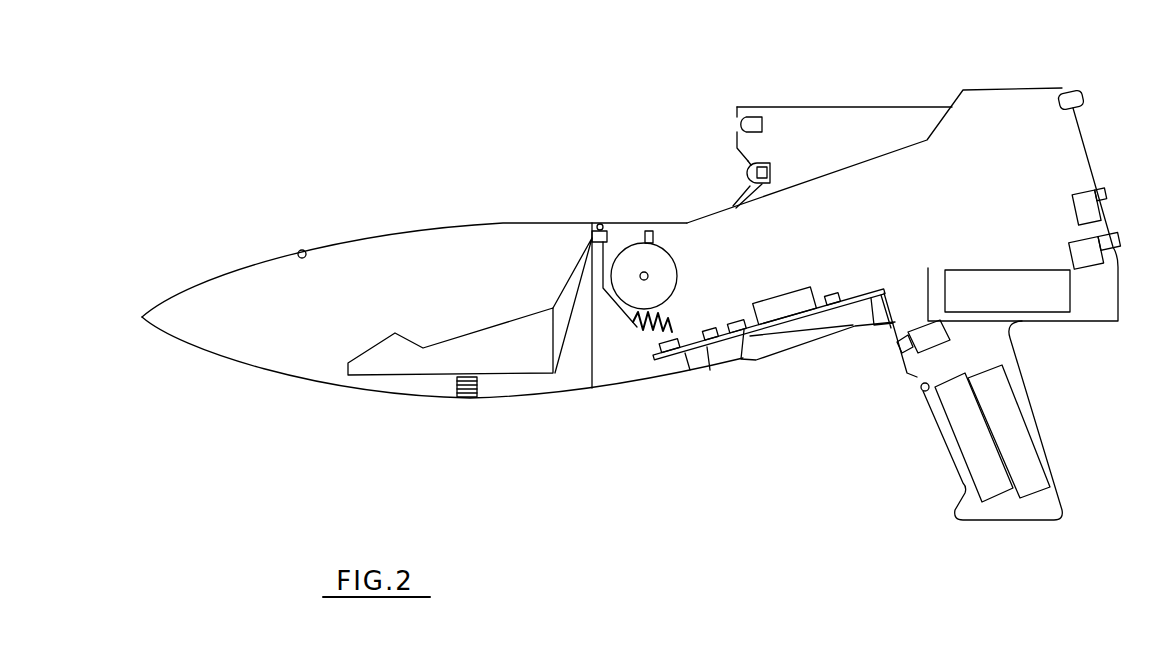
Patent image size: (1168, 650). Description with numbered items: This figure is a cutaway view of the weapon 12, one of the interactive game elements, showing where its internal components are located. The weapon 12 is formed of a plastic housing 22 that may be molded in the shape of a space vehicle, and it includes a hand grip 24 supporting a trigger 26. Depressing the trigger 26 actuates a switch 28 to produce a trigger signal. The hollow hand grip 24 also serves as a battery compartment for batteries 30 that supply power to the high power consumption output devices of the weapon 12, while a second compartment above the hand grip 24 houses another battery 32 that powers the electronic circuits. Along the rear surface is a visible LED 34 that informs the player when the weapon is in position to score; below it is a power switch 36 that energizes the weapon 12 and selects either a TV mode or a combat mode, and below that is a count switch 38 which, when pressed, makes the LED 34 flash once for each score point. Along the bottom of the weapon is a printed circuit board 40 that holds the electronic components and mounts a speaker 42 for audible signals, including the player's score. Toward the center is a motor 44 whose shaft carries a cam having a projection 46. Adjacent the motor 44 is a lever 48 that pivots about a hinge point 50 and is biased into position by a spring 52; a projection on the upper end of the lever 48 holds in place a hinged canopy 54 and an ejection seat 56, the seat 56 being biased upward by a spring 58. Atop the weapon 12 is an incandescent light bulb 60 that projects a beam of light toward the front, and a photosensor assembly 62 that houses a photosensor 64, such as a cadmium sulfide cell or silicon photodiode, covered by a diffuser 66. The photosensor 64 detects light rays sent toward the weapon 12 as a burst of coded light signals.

The weapon 12 is at (488, 110).
The plastic housing 22 is at (1028, 87).
The hand grip 24 is at (948, 452).
The trigger 26 is at (907, 358).
The switch 28 is at (920, 352).
The batteries 30 is at (963, 416).
The battery 32 is at (1050, 288).
The visible LED 34 is at (1083, 93).
The power switch 36 is at (1098, 197).
The count switch 38 is at (1123, 242).
The printed circuit board 40 is at (858, 290).
The speaker 42 is at (797, 287).
The motor 44 is at (678, 267).
The projection 46 is at (641, 230).
The lever 48 is at (624, 310).
The hinge point 50 is at (590, 238).
The spring 52 is at (668, 307).
The hinged canopy 54 is at (442, 227).
The ejection seat 56 is at (490, 325).
The spring 58 is at (480, 380).
The incandescent light bulb 60 is at (742, 124).
The photosensor assembly 62 is at (757, 160).
The photosensor 64 is at (770, 176).
The diffuser 66 is at (745, 175).